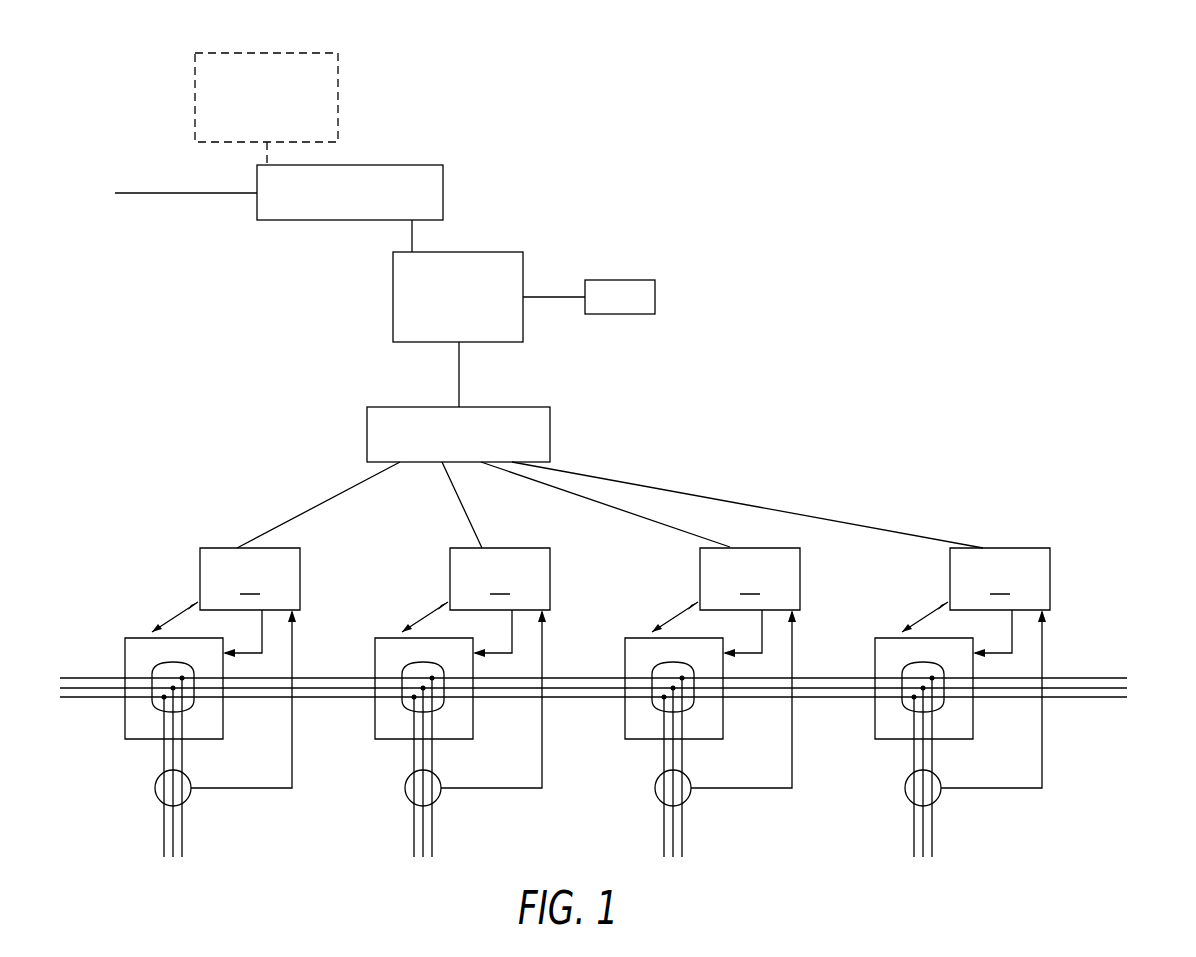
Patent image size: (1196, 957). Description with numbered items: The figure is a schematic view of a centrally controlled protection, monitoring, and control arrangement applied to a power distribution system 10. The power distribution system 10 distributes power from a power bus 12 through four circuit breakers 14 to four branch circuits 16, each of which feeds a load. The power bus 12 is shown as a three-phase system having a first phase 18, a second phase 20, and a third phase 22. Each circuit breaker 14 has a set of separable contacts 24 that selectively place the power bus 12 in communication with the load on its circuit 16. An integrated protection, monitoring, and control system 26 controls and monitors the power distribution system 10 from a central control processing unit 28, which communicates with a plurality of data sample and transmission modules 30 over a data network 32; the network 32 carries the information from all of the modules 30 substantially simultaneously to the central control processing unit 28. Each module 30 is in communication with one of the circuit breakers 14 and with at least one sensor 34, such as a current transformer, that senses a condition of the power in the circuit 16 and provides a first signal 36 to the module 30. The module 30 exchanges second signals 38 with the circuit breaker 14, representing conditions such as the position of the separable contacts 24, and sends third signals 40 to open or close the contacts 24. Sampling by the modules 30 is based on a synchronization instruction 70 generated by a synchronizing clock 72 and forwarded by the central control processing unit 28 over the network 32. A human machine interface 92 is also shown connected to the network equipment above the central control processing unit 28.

The power distribution system 10 is at (78, 598).
The power bus 12 is at (599, 688).
The circuit breaker 14 is at (125, 652).
The branch circuit 16 is at (164, 756).
The first phase 18 is at (1127, 678).
The second phase 20 is at (1127, 688).
The third phase 22 is at (1127, 697).
The separable contacts 24 is at (178, 662).
The integrated protection, monitoring, and control system 26 is at (681, 445).
The central control processing unit 28 is at (393, 296).
The data sample and transmission module 30 is at (625, 579).
The data network 32 is at (459, 375).
The sensor 34 is at (155, 790).
The first signal 36 is at (240, 789).
The second signal 38 is at (172, 620).
The third signal 40 is at (262, 640).
The synchronization instruction 70 is at (542, 296).
The synchronizing clock 72 is at (618, 314).
The human machine interface HMI 92 is at (252, 53).